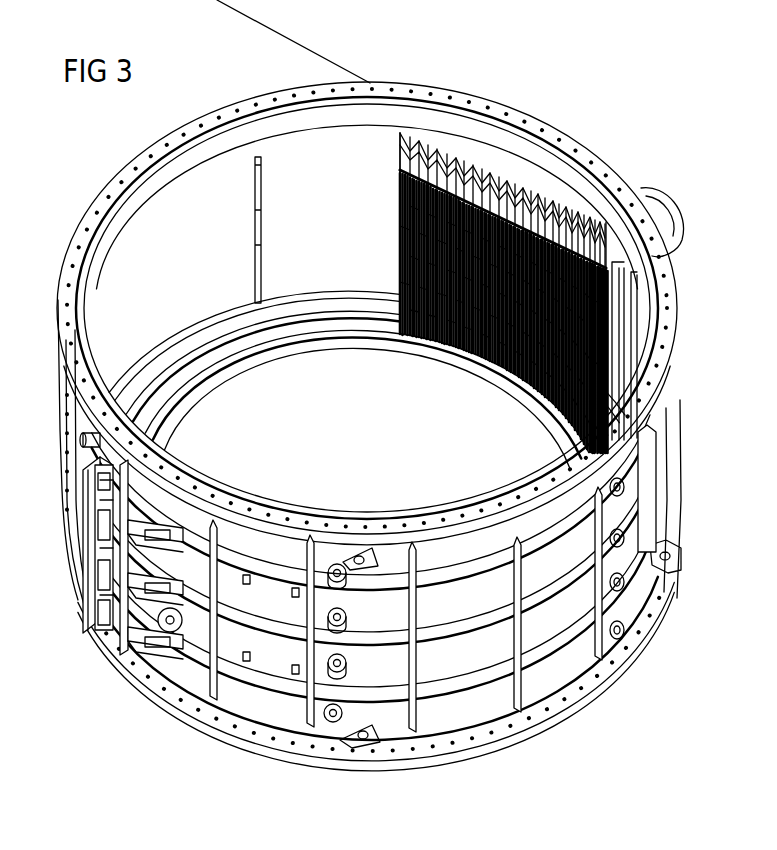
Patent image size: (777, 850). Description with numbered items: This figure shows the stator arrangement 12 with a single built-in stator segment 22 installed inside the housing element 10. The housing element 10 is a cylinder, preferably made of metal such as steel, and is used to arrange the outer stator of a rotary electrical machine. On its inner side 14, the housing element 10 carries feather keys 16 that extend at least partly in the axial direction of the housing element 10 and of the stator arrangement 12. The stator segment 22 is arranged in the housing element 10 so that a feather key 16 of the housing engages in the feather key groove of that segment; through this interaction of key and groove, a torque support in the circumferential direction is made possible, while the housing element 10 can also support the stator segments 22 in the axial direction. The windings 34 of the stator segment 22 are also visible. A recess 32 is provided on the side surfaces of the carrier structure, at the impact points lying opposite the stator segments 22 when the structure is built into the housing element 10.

The housing element 10 is at (384, 404).
The stator arrangement 12 is at (382, 74).
The inner side 14 is at (324, 192).
The feather key 16 is at (263, 238).
The stator segment 22 is at (612, 297).
The recess 32 is at (650, 335).
The windings 34 is at (402, 258).